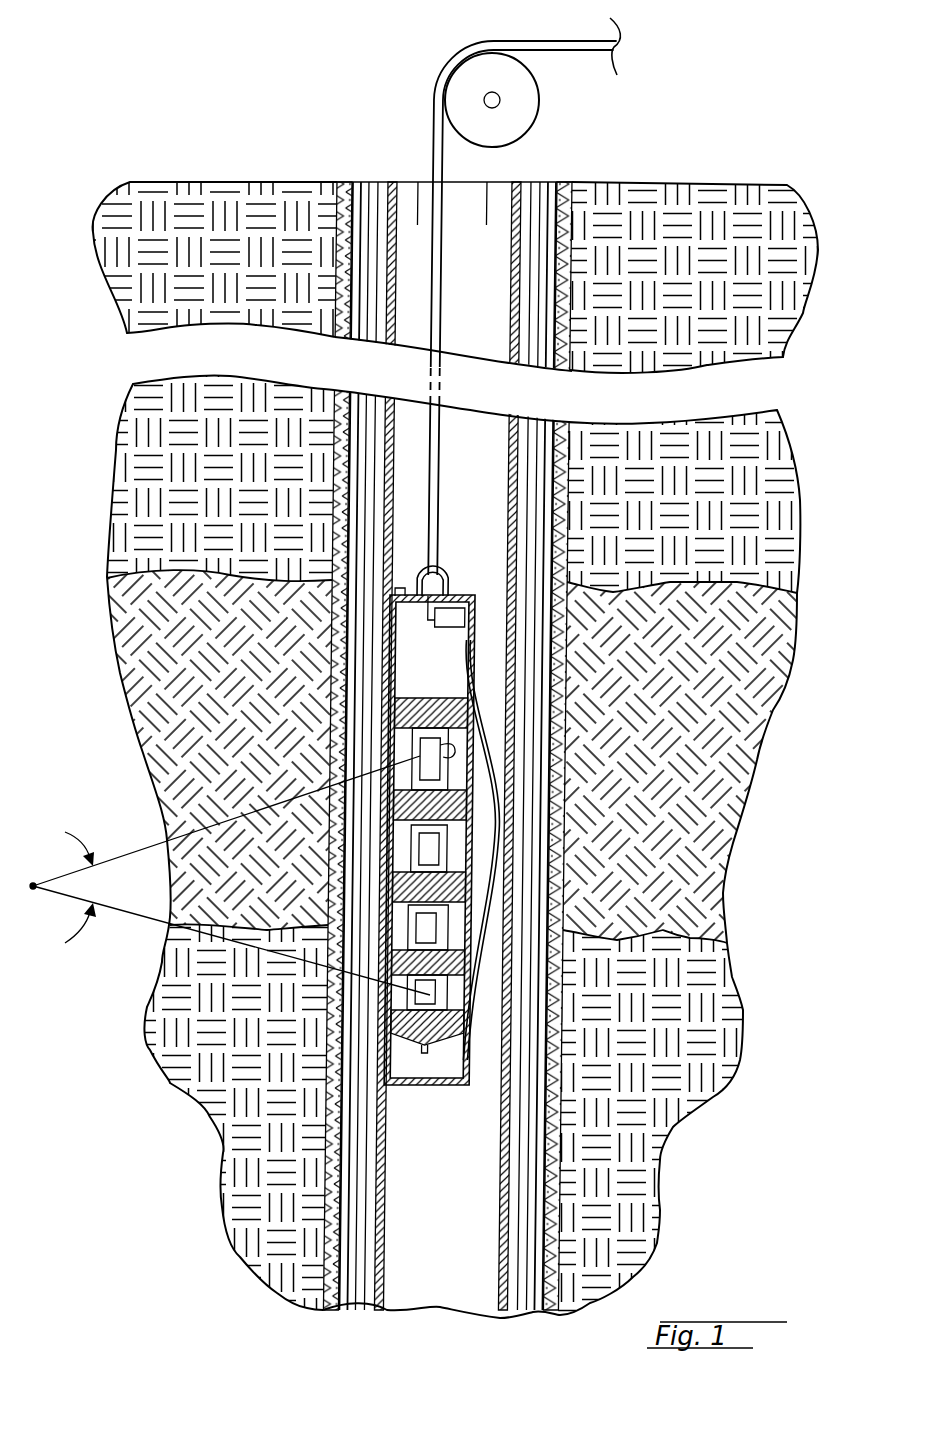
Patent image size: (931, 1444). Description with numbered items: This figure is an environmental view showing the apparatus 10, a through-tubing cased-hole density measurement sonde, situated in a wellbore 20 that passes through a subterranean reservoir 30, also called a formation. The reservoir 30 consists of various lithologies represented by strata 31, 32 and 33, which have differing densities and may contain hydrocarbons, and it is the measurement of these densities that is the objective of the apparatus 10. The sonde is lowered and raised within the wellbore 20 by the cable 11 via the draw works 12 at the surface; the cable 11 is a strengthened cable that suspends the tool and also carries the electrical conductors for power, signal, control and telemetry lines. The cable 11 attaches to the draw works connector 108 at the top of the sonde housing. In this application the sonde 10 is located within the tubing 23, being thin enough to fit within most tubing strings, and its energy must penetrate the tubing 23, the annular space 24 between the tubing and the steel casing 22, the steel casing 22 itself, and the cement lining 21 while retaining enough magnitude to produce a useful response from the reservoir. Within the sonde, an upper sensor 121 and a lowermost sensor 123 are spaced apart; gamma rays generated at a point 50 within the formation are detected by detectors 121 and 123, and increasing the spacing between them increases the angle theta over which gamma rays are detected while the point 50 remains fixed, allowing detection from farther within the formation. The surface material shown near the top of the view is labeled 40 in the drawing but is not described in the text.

The apparatus 10 is at (478, 1085).
The cable 11 is at (520, 42).
The draw works 12 is at (541, 116).
The wellbore 20 is at (453, 759).
The cement lining 21 is at (339, 1312).
The steel casing 22 is at (356, 1315).
The tubing 23 is at (394, 1305).
The annular space 24 is at (371, 1313).
The subterranean reservoir 30 is at (103, 622).
The stratum 31 is at (118, 470).
The stratum 32 is at (110, 700).
The stratum 33 is at (168, 1073).
The surface formation 40 is at (652, 185).
The point 50 is at (33, 880).
The draw works connector 108 is at (450, 575).
The upper sensor 121 is at (428, 745).
The lowermost sensor 123 is at (428, 998).